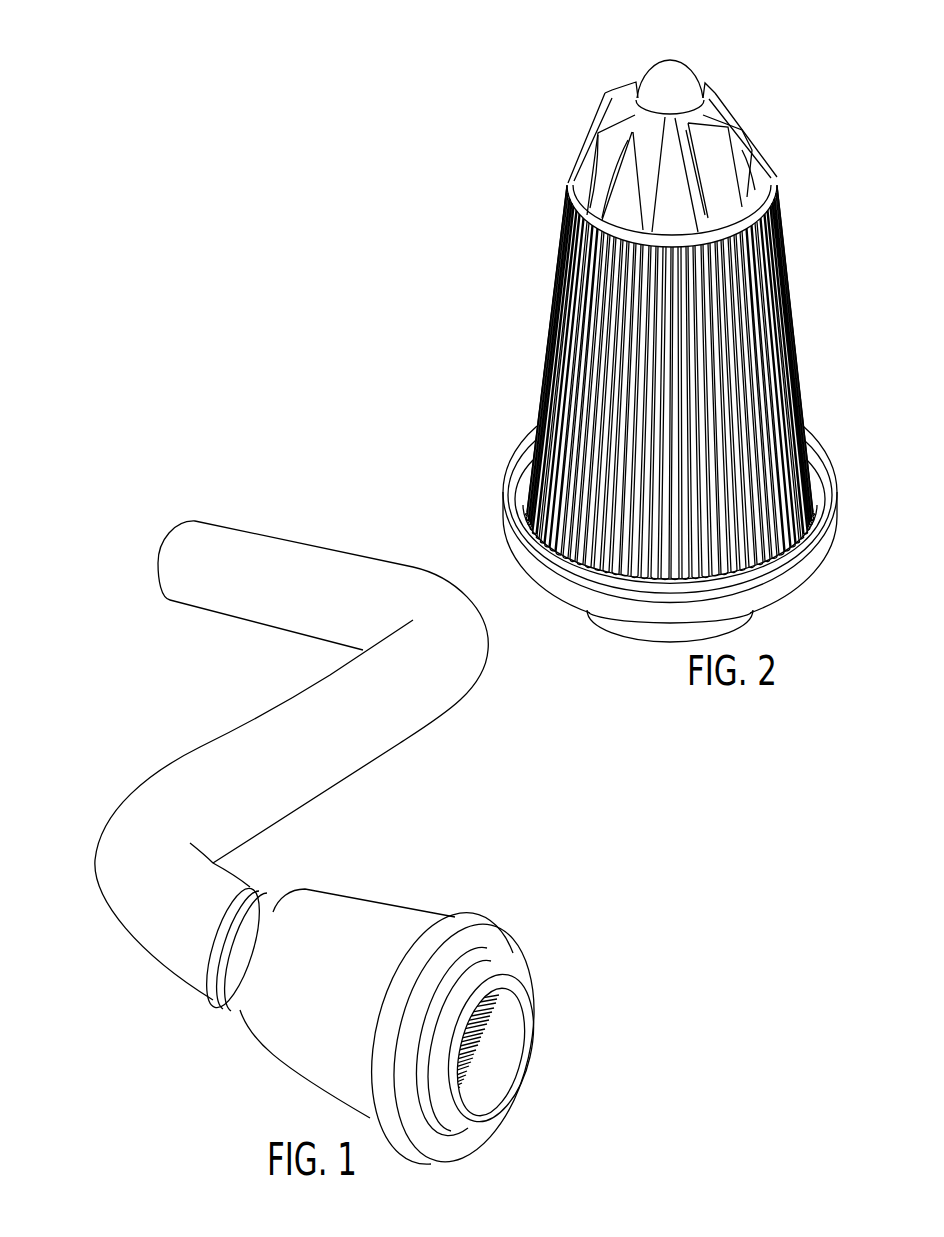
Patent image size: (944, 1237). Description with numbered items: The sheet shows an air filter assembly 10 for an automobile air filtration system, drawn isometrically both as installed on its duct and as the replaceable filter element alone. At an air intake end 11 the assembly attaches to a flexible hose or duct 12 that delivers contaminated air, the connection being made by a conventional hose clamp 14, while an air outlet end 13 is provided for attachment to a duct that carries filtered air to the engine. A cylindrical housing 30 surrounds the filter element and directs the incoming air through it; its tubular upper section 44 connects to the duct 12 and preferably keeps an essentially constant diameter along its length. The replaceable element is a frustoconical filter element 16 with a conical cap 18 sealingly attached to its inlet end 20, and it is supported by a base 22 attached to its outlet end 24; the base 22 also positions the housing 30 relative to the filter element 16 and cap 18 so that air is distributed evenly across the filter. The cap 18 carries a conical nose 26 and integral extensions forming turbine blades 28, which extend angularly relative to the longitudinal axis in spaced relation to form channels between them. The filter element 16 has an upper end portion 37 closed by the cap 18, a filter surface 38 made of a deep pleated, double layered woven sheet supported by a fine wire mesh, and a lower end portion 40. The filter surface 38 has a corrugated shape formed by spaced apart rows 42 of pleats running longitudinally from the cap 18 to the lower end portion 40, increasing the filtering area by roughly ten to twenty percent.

In FIG. 1, the air filter assembly 10 is at (458, 878).
In FIG. 1, the air intake end 11 is at (318, 888).
In FIG. 1, the duct 12 is at (395, 730).
In FIG. 1, the air outlet end 13 is at (540, 1035).
In FIG. 1, the hose clamp 14 is at (255, 885).
In FIG. 2, the filter element 16 is at (532, 284).
In FIG. 2, the conical cap 18 is at (753, 118).
In FIG. 2, the inlet end 20 is at (568, 190).
In FIG. 2, the base 22 is at (822, 548).
In FIG. 1, the base 22 is at (470, 1138).
In FIG. 2, the outlet end 24 is at (540, 510).
In FIG. 2, the conical nose 26 is at (667, 62).
In FIG. 2, the turbine blades 28 is at (590, 147).
In FIG. 1, the cylindrical housing 30 is at (263, 1054).
In FIG. 2, the upper end portion 37 is at (788, 250).
In FIG. 2, the filter surface 38 is at (800, 368).
In FIG. 2, the lower end portion 40 is at (810, 507).
In FIG. 2, the rows 42 is at (563, 342).
In FIG. 1, the upper section 44 is at (210, 975).